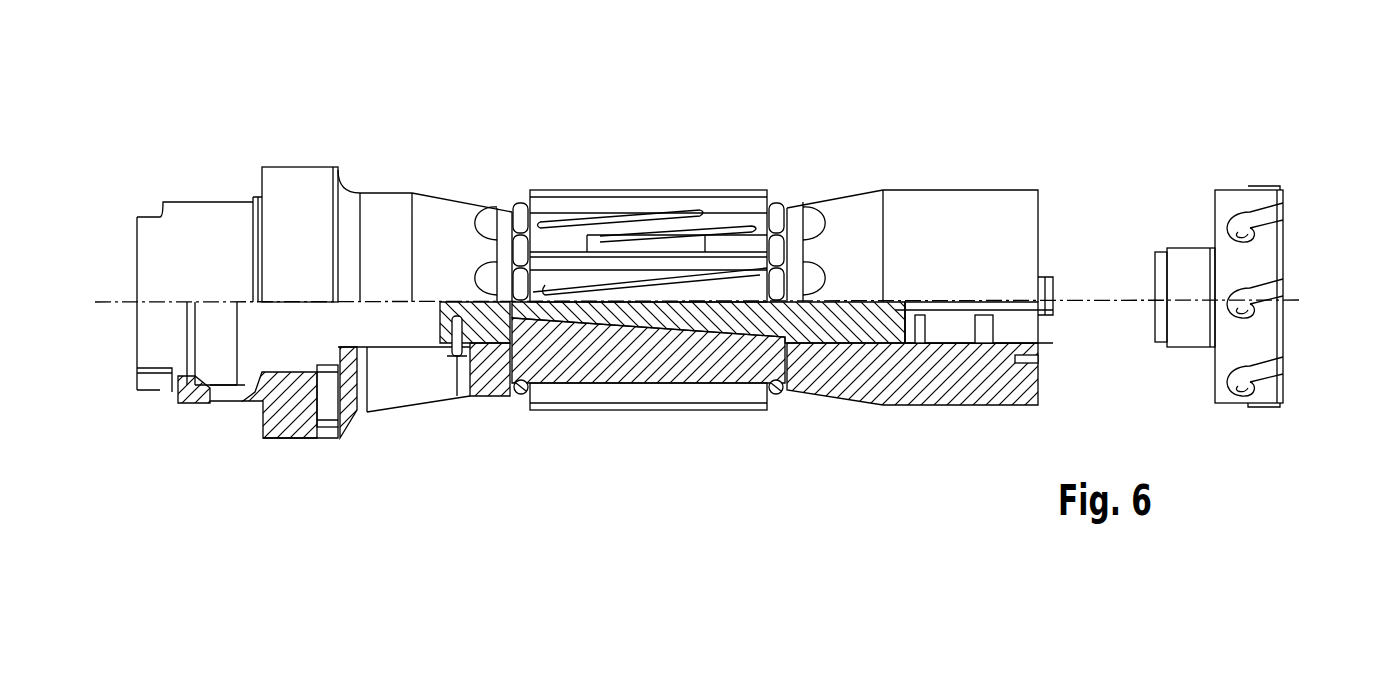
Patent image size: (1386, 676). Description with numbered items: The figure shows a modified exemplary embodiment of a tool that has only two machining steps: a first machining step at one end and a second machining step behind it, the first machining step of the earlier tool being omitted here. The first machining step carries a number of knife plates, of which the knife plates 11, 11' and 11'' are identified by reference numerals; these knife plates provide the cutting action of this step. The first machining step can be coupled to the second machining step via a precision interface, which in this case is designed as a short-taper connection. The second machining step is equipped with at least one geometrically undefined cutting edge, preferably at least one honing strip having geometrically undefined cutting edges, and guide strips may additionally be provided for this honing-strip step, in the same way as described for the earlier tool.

The knife plate 11 is at (1298, 222).
The knife plate 11' is at (1302, 298).
The knife plate 11'' is at (1305, 376).